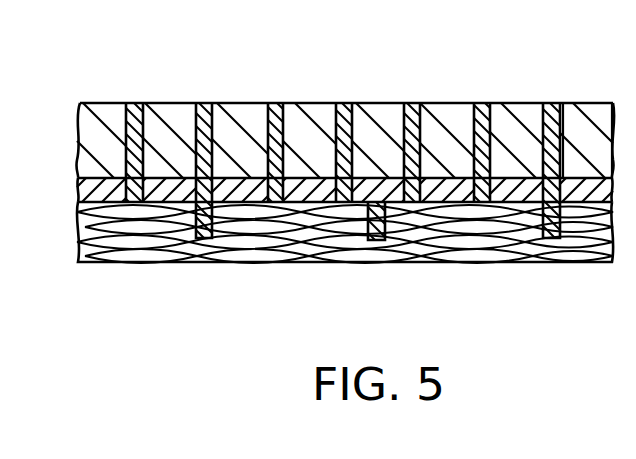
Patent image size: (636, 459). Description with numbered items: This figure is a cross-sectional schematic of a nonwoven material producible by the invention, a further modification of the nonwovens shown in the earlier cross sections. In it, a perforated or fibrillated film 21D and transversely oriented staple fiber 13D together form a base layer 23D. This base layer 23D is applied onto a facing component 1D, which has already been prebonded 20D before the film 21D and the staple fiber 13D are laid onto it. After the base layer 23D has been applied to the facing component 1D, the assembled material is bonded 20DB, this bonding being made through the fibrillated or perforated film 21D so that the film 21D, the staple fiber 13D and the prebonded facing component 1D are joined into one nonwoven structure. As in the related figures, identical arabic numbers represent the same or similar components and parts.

The facing component 1D is at (485, 243).
The transversely oriented staple fiber 13D is at (380, 105).
The prebonded 20D is at (206, 200).
The bonded 20DB is at (133, 105).
The perforated or fibrillated film 21D is at (310, 193).
The base layer 23D is at (588, 118).